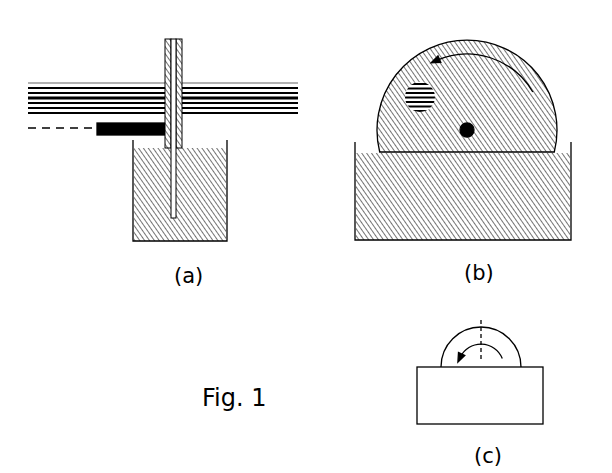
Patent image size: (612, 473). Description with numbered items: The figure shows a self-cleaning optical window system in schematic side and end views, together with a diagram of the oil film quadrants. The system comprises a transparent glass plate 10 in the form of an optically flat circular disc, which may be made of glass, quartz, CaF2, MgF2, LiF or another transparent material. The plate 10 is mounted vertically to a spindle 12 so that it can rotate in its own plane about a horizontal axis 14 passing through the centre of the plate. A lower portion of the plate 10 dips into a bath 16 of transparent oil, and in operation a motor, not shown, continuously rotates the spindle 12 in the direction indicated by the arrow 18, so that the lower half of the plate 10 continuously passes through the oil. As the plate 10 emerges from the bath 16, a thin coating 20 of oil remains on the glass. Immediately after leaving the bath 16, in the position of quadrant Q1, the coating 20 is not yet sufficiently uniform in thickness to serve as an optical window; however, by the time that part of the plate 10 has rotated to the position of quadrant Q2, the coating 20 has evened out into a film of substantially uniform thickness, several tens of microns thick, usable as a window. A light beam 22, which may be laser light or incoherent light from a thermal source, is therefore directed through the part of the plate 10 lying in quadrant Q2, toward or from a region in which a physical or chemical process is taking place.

The transparent glass plate 10 is at (184, 45).
The spindle 12 is at (456, 130).
The horizontal axis 14 is at (64, 134).
The bath of transparent oil 16 is at (460, 224).
The arrow 18 is at (510, 60).
The oil coating 20 is at (187, 61).
The light beam 22 is at (400, 97).
The quadrant Q1 is at (505, 345).
The quadrant Q2 is at (460, 345).